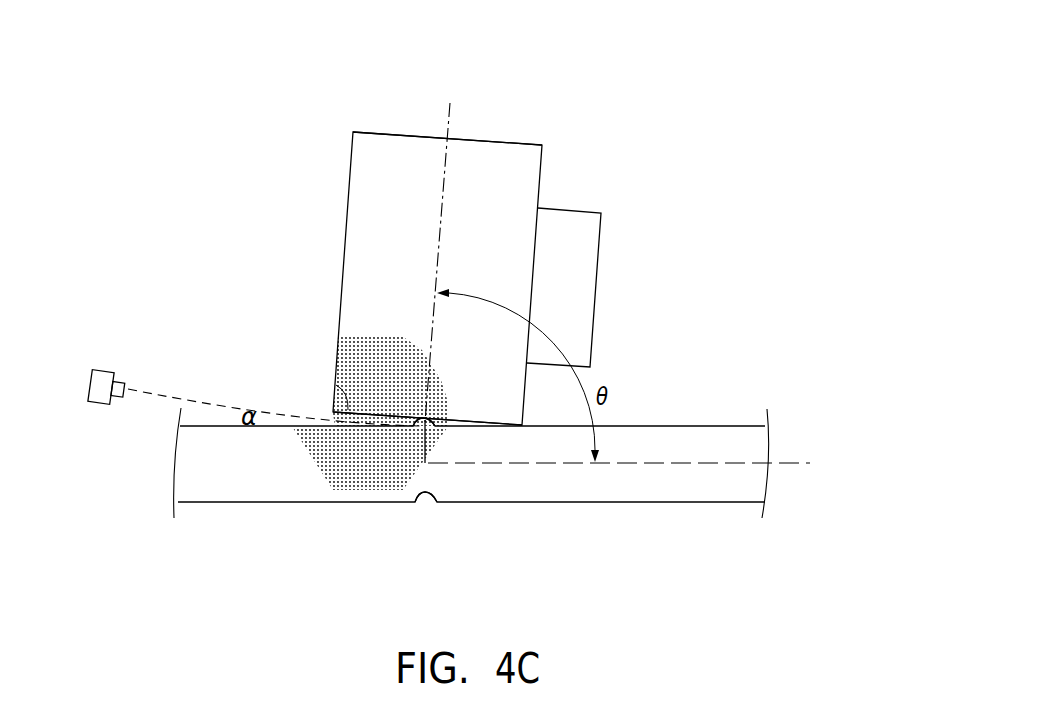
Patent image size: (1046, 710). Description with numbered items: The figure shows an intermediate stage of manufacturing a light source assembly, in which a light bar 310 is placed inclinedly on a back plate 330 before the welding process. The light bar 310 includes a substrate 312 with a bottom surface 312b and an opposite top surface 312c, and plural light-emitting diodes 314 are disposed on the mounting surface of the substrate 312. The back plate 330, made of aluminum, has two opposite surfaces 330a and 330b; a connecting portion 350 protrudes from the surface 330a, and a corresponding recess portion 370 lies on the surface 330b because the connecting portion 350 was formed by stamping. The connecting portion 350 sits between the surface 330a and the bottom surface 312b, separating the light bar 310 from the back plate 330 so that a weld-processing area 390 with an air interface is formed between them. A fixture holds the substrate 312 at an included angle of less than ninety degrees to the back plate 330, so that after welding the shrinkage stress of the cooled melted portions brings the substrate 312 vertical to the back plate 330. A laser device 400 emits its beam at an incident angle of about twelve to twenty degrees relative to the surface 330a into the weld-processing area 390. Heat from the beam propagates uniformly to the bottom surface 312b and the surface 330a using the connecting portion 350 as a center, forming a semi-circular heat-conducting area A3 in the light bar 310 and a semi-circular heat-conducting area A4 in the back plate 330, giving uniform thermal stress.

The light bar 310 is at (538, 112).
The substrate 312 is at (373, 217).
The bottom surface 312b is at (337, 385).
The top surface 312c is at (392, 132).
The light-emitting diodes 314 is at (570, 280).
The back plate 330 is at (753, 443).
The surface 330a is at (687, 427).
The surface 330b is at (640, 502).
The connecting portion 350 is at (422, 430).
The recess portion 370 is at (427, 502).
The weld-processing area 390 is at (376, 421).
The laser device 400 is at (103, 378).
The heat-conducting area A3 is at (403, 357).
The heat-conducting area A4 is at (416, 468).